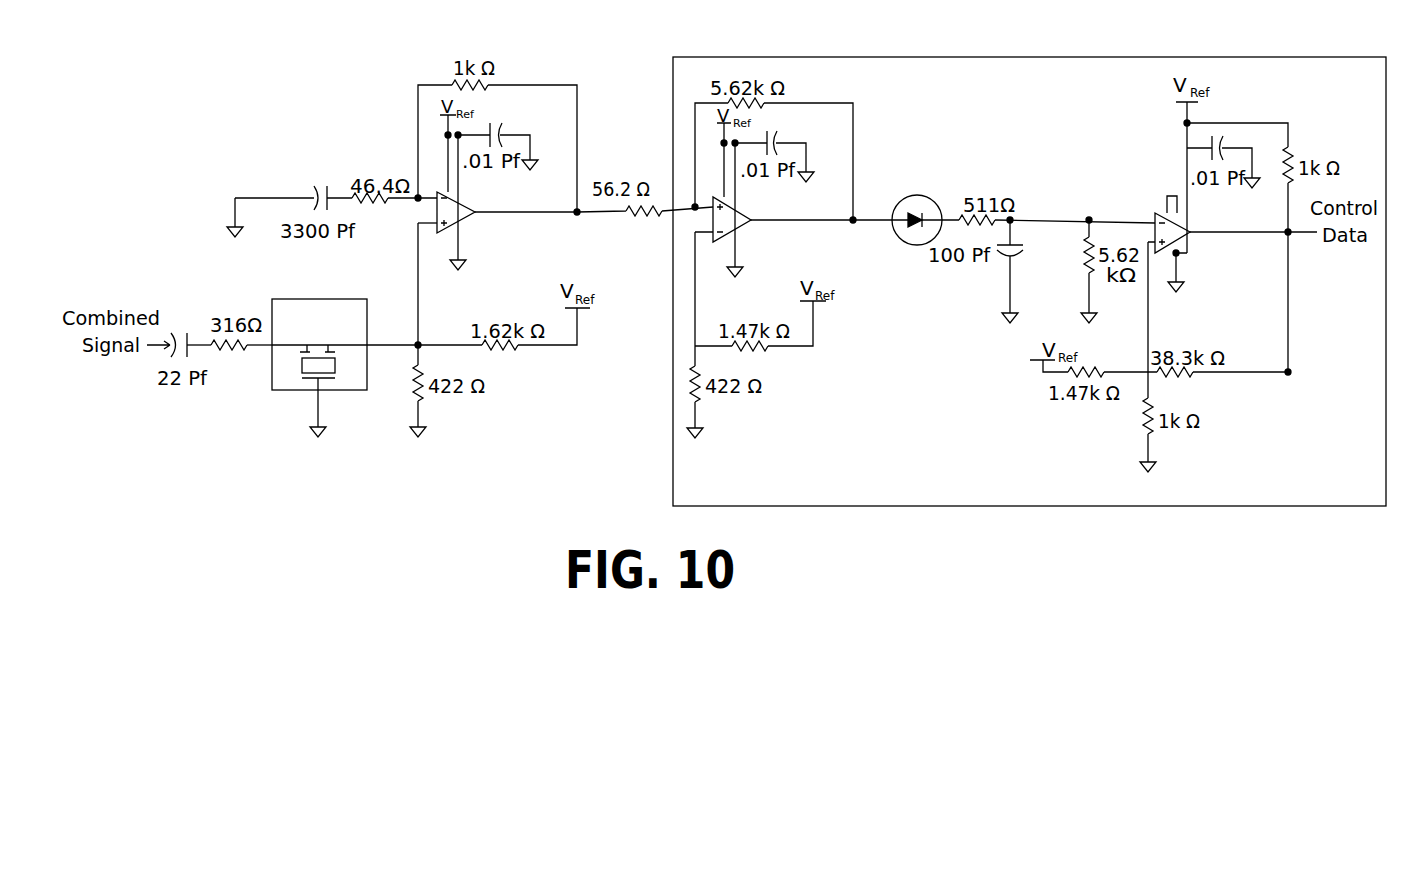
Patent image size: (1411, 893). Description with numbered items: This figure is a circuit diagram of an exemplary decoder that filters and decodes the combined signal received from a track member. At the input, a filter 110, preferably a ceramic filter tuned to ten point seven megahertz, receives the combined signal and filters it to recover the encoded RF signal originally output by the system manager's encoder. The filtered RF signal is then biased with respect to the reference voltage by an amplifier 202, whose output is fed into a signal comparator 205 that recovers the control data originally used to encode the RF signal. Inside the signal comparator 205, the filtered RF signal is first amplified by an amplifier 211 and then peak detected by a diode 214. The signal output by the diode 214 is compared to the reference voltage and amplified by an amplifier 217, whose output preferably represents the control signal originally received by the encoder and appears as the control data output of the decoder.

The filter 110 is at (365, 358).
The amplifier 202 is at (468, 216).
The signal comparator 205 is at (1045, 57).
The amplifier 211 is at (746, 222).
The diode 214 is at (910, 196).
The amplifier 217 is at (1157, 213).